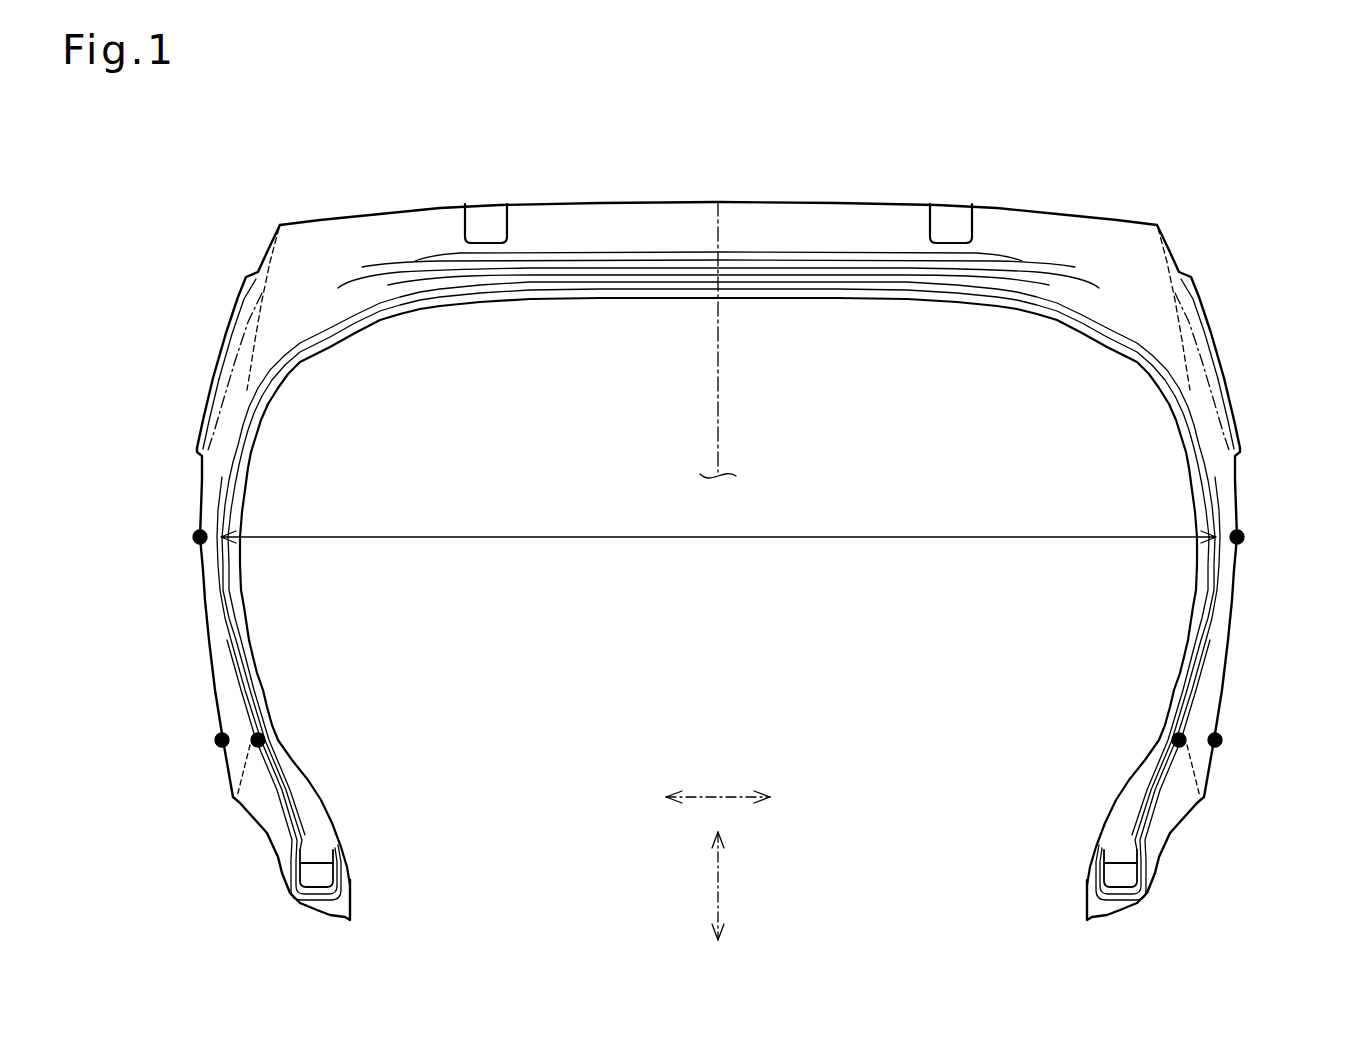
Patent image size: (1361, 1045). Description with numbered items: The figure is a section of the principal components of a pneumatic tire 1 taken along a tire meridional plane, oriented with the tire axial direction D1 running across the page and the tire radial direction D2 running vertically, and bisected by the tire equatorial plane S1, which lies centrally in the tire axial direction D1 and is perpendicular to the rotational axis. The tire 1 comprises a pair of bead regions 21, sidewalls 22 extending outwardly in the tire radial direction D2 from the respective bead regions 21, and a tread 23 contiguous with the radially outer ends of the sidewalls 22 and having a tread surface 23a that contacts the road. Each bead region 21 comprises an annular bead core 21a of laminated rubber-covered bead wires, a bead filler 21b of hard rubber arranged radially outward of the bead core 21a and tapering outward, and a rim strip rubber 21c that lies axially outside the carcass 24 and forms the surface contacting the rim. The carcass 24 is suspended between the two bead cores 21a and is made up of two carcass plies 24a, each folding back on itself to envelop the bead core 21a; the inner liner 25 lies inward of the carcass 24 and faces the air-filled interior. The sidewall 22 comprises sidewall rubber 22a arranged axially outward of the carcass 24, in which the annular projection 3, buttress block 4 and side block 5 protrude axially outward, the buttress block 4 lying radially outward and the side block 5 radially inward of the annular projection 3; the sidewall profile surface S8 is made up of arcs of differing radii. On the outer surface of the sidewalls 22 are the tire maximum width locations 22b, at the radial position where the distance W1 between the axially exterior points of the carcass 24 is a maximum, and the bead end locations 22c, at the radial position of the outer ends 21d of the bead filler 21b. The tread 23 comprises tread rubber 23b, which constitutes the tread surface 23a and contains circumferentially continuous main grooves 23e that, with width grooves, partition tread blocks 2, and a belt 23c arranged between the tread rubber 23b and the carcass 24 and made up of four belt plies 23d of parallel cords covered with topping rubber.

The tire 1 is at (1258, 135).
The tread block 2 is at (334, 213).
The annular projection 3 is at (227, 328).
The buttress block 4 is at (237, 298).
The side block 5 is at (205, 410).
The profile surface S8 is at (225, 365).
The bead region 21 is at (238, 898).
The bead core 21a is at (320, 882).
The bead filler 21b is at (303, 818).
The rim strip rubber 21c is at (275, 827).
The outer end of bead filler 21d is at (258, 740).
The sidewall 22 is at (178, 468).
The sidewall rubber 22a is at (205, 607).
The tire maximum width location 22b is at (200, 537).
The bead end location 22c is at (222, 740).
The tread 23 is at (773, 177).
The tread surface 23a is at (403, 199).
The tread rubber 23b is at (676, 208).
The belt 23c is at (860, 262).
The belt ply 23d is at (903, 276).
The main groove 23e is at (489, 206).
The carcass 24 is at (576, 283).
The carcass ply 24a is at (308, 343).
The inner liner 25 is at (787, 299).
The tire equatorial plane S1 is at (716, 437).
The distance between exterior points of carcass W1 is at (718, 549).
The tire axial direction D1 is at (718, 787).
The tire radial direction D2 is at (735, 886).